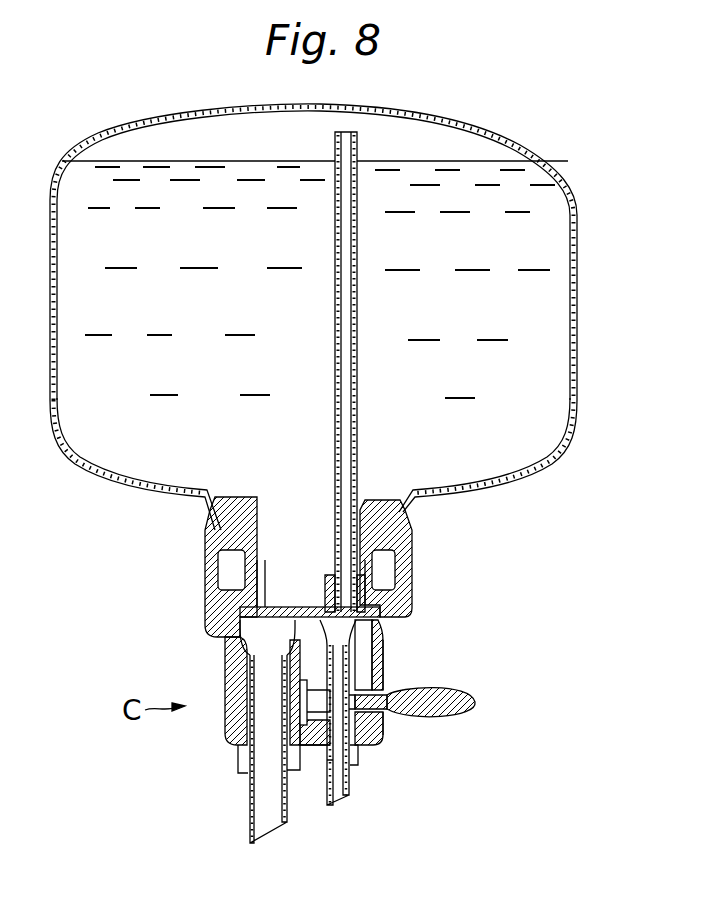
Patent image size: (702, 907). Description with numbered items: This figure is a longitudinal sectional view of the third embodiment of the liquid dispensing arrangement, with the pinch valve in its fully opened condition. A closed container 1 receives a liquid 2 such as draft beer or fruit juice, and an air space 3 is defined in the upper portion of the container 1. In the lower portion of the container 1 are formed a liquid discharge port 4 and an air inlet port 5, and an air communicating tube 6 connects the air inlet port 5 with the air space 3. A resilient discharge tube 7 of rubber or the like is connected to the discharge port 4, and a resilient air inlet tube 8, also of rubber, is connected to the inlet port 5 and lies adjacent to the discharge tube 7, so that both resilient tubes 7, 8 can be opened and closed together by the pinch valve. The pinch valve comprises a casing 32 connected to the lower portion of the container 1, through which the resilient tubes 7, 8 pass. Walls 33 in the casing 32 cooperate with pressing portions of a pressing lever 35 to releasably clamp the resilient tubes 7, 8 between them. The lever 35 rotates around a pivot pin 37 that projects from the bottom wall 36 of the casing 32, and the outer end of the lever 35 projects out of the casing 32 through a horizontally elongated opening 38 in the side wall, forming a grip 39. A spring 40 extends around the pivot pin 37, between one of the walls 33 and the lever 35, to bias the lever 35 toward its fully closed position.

The closed container 1 is at (576, 312).
The liquid 2 is at (548, 210).
The air space 3 is at (410, 138).
The liquid discharge port 4 is at (262, 646).
The air inlet port 5 is at (388, 640).
The air communicating tube 6 is at (360, 450).
The resilient discharge tube 7 is at (248, 803).
The resilient air inlet tube 8 is at (350, 788).
The casing 32 is at (405, 595).
The walls 33 is at (228, 717).
The pressing lever 35 is at (388, 712).
The bottom wall 36 is at (306, 750).
The pivot pin 37 is at (300, 650).
The horizontally elongated opening 38 is at (385, 680).
The grip 39 is at (455, 688).
The spring 40 is at (308, 702).